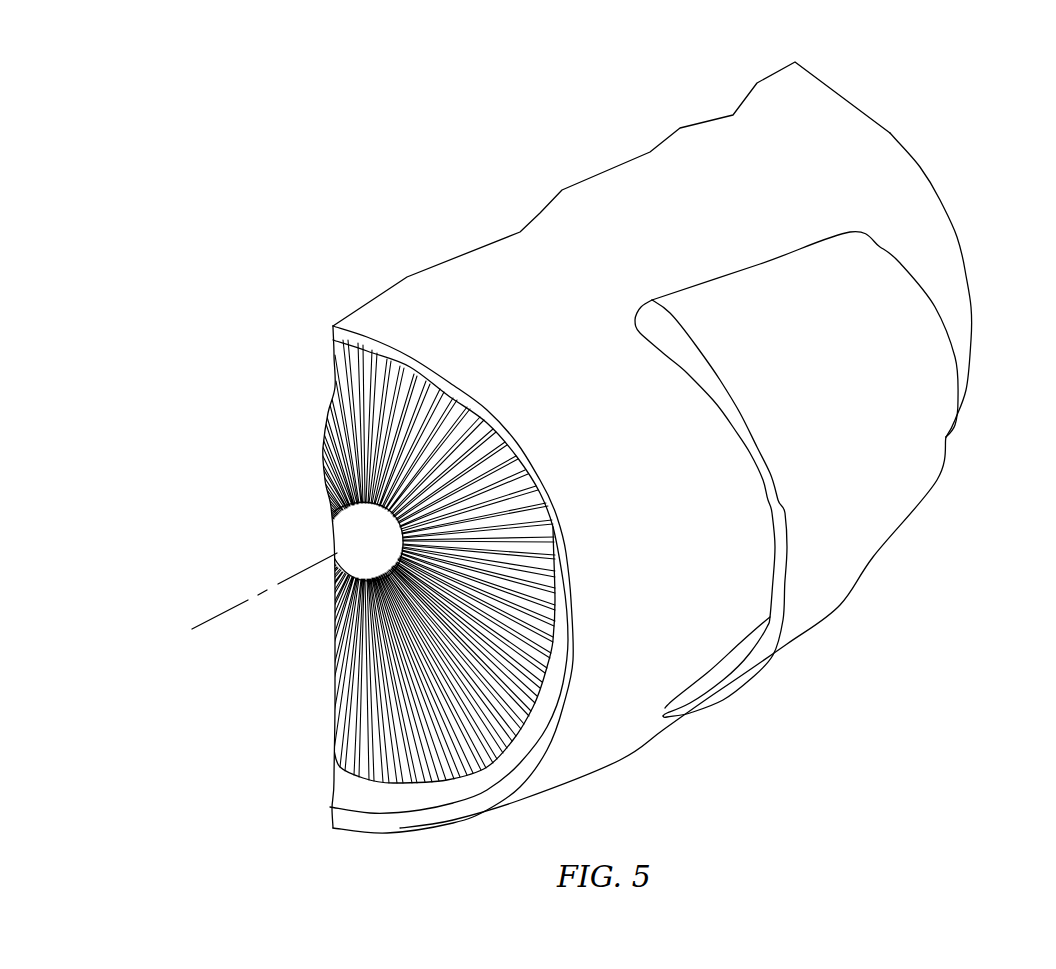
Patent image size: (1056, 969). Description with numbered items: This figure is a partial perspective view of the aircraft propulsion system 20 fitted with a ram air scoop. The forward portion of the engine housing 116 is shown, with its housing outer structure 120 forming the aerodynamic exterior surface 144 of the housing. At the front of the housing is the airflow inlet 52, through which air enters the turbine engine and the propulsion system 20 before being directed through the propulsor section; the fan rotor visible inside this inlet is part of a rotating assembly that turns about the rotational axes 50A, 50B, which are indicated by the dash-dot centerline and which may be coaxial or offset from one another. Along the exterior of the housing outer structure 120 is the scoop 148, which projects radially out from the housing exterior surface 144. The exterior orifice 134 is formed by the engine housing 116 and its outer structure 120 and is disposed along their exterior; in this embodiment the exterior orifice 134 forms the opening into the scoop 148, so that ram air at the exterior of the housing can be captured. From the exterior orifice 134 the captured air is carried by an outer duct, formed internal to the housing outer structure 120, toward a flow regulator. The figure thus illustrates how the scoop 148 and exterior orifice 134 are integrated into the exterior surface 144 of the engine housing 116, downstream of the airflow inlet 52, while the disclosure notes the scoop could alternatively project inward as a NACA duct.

The aircraft propulsion system 20 is at (266, 266).
The engine housing 116 is at (405, 263).
The housing outer structure 120 is at (567, 182).
The aerodynamic exterior surface 144 is at (472, 298).
The scoop 148 is at (645, 291).
The exterior orifice 134 is at (720, 486).
The airflow inlet 52 is at (331, 760).
The rotational axis 50A is at (250, 640).
The rotational axis 50B is at (213, 620).